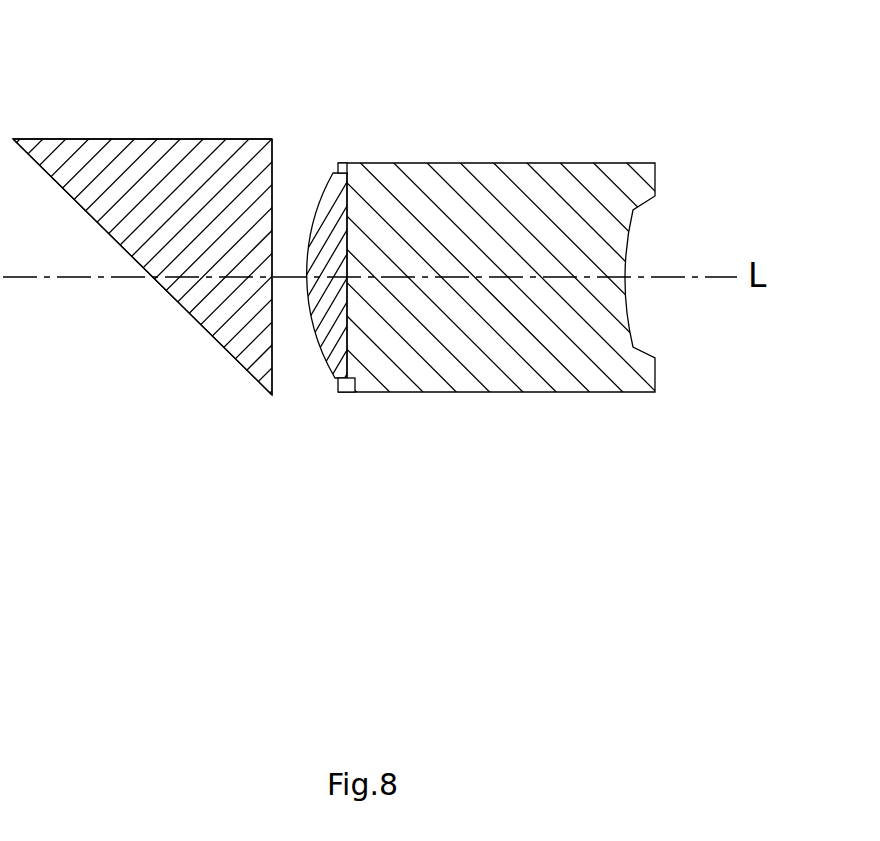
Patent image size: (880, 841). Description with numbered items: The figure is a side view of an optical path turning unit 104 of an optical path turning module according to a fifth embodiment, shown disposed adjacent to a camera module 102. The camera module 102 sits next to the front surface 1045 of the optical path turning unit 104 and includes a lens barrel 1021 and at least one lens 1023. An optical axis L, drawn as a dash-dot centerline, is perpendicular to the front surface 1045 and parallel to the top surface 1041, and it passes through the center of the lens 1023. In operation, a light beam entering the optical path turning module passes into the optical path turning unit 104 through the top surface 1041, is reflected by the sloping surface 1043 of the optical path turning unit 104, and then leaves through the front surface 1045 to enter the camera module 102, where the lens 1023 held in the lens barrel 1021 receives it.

The camera module 102 is at (489, 281).
The lens barrel 1021 is at (531, 348).
The lens 1023 is at (333, 210).
The optical path turning unit 104 is at (212, 165).
The top surface 1041 is at (82, 139).
The sloping surface 1043 is at (183, 305).
The front surface 1045 is at (275, 348).